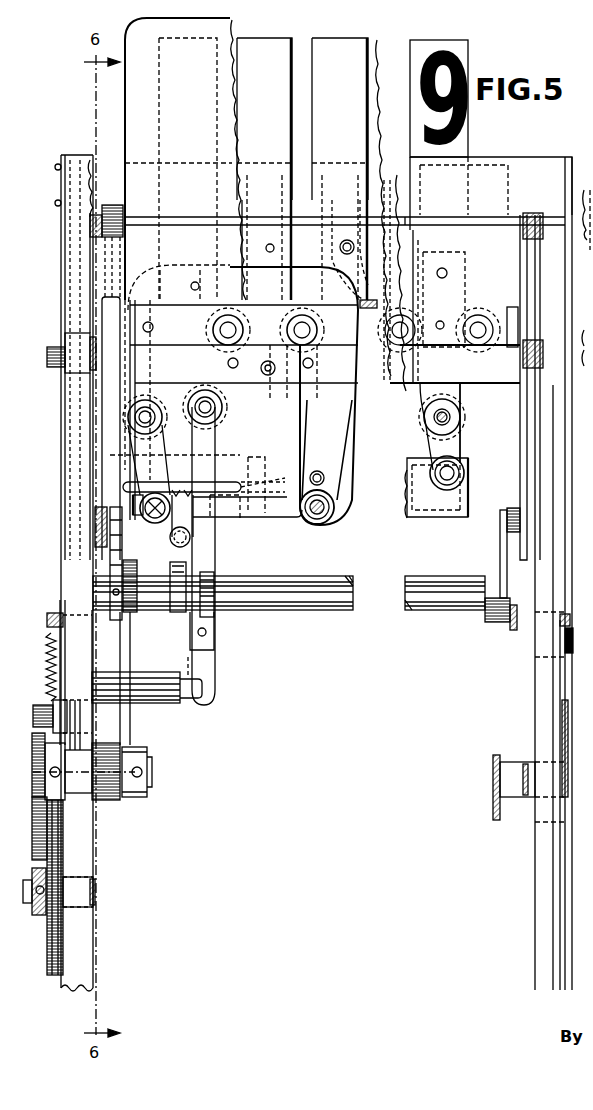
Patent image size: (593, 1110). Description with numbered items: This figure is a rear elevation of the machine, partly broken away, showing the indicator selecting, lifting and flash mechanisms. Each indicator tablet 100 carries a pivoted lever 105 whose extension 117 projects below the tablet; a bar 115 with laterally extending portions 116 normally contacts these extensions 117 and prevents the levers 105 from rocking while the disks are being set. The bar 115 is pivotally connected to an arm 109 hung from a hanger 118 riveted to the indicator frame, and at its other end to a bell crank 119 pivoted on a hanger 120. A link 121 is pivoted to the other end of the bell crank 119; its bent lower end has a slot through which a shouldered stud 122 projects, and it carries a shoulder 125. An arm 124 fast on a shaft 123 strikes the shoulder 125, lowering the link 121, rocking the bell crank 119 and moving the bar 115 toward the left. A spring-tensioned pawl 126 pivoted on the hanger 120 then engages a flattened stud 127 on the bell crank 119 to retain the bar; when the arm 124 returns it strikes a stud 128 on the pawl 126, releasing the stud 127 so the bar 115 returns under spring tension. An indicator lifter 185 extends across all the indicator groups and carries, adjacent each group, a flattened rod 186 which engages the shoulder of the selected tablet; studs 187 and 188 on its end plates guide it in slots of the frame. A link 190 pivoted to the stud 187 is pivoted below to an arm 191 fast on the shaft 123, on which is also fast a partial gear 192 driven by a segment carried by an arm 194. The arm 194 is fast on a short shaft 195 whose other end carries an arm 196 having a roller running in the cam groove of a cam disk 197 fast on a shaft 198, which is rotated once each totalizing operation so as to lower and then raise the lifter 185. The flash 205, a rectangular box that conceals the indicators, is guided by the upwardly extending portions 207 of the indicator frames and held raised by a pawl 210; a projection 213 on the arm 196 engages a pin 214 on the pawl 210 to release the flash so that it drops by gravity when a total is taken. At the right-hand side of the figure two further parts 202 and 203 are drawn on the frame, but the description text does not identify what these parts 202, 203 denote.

The indicator tablet 100 is at (362, 45).
The lever 105 is at (356, 196).
The arm 109 is at (455, 443).
The bar 115 is at (468, 512).
The laterally extending portion 116 is at (228, 518).
The extension 117 is at (265, 522).
The hanger 118 is at (458, 401).
The bell crank 119 is at (160, 445).
The hanger 120 is at (160, 372).
The link 121 is at (217, 563).
The shouldered stud 122 is at (162, 706).
The shaft 123 is at (300, 590).
The arm 124 is at (172, 562).
The shoulder 125 is at (170, 622).
The pawl 126 is at (222, 480).
The flattened stud 127 is at (148, 520).
The stud 128 is at (170, 540).
The indicator lifter 185 is at (410, 378).
The flattened rod 186 is at (262, 364).
The stud 187 is at (90, 232).
The stud 188 is at (90, 340).
The link 190 is at (106, 445).
The arm 191 is at (110, 558).
The partial gear 192 is at (135, 612).
The arm 194 is at (122, 728).
The short shaft 195 is at (152, 773).
The arm 196 is at (65, 797).
The cam disk 197 is at (53, 977).
The shaft 198 is at (96, 892).
The bracket 202 is at (568, 708).
The bolt 203 is at (572, 653).
The flash 205 is at (528, 165).
The upwardly extending portion 207 is at (235, 27).
The pawl 210 is at (63, 680).
The projection 213 is at (60, 738).
The pin 214 is at (55, 720).